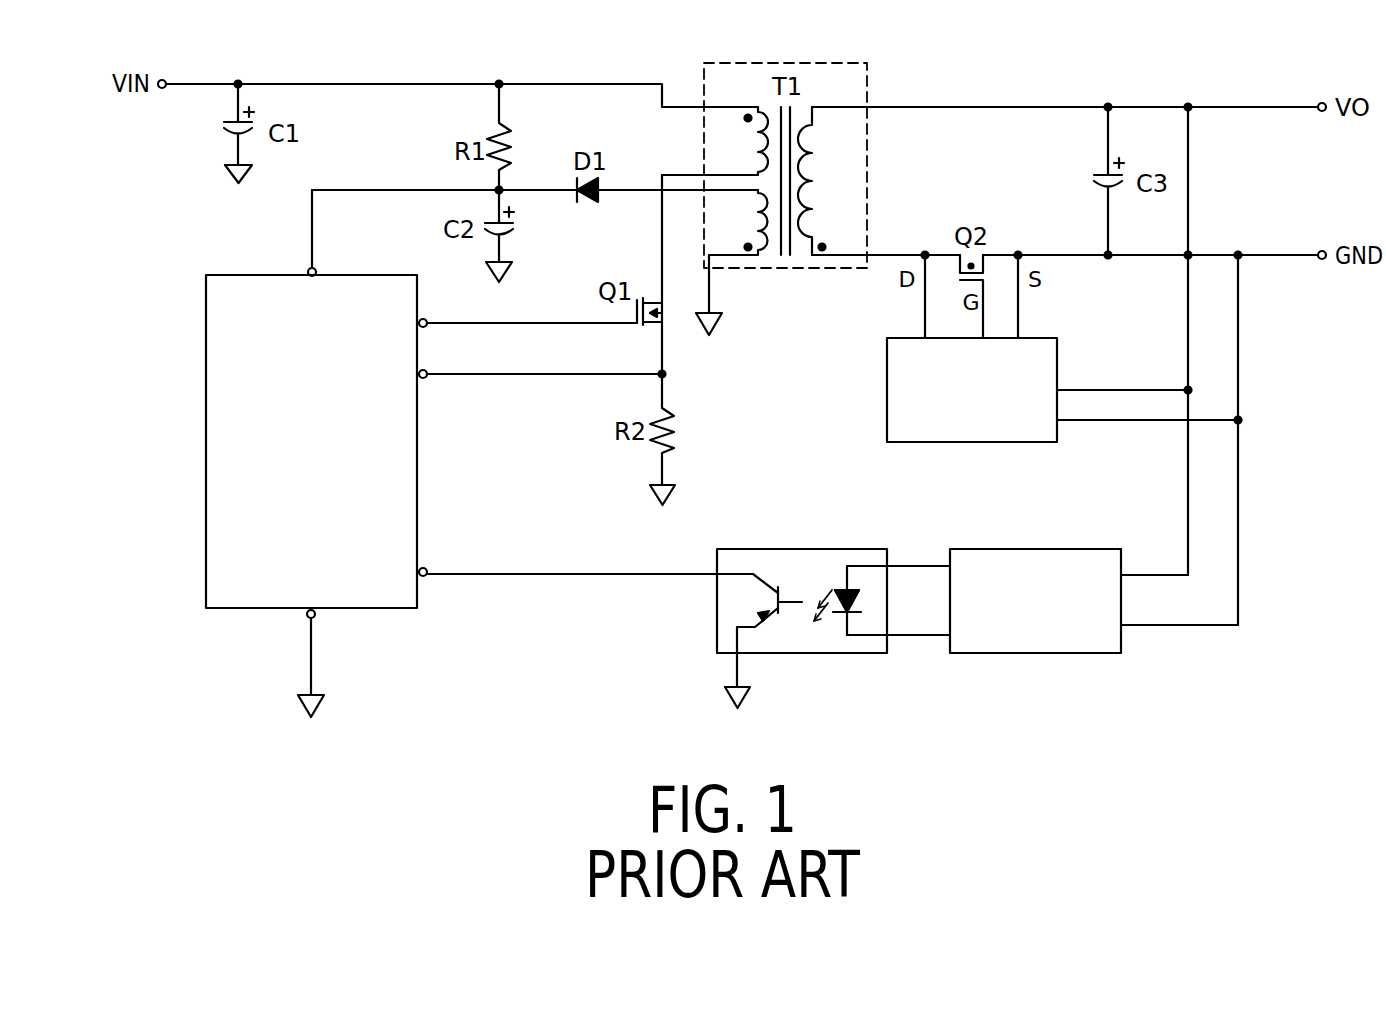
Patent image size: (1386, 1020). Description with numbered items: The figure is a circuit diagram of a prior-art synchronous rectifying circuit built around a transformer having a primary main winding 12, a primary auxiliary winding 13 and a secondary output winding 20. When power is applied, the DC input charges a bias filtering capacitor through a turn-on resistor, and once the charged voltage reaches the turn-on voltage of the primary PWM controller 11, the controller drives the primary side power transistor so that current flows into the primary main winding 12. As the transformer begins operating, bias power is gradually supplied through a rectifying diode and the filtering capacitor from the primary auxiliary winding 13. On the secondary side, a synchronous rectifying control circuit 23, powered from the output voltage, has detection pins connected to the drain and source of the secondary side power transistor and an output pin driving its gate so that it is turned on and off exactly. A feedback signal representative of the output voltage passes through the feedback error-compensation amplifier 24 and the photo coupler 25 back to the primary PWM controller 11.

The primary pulse width modulation (PWM) controller 11 is at (206, 440).
The primary main winding 12 is at (715, 141).
The primary auxiliary winding 13 is at (732, 262).
The secondary output winding 20 is at (825, 181).
The synchronous rectifying control circuit 23 is at (887, 378).
The feedback error-compensation amplifier 24 is at (1093, 549).
The photo coupler 25 is at (818, 549).